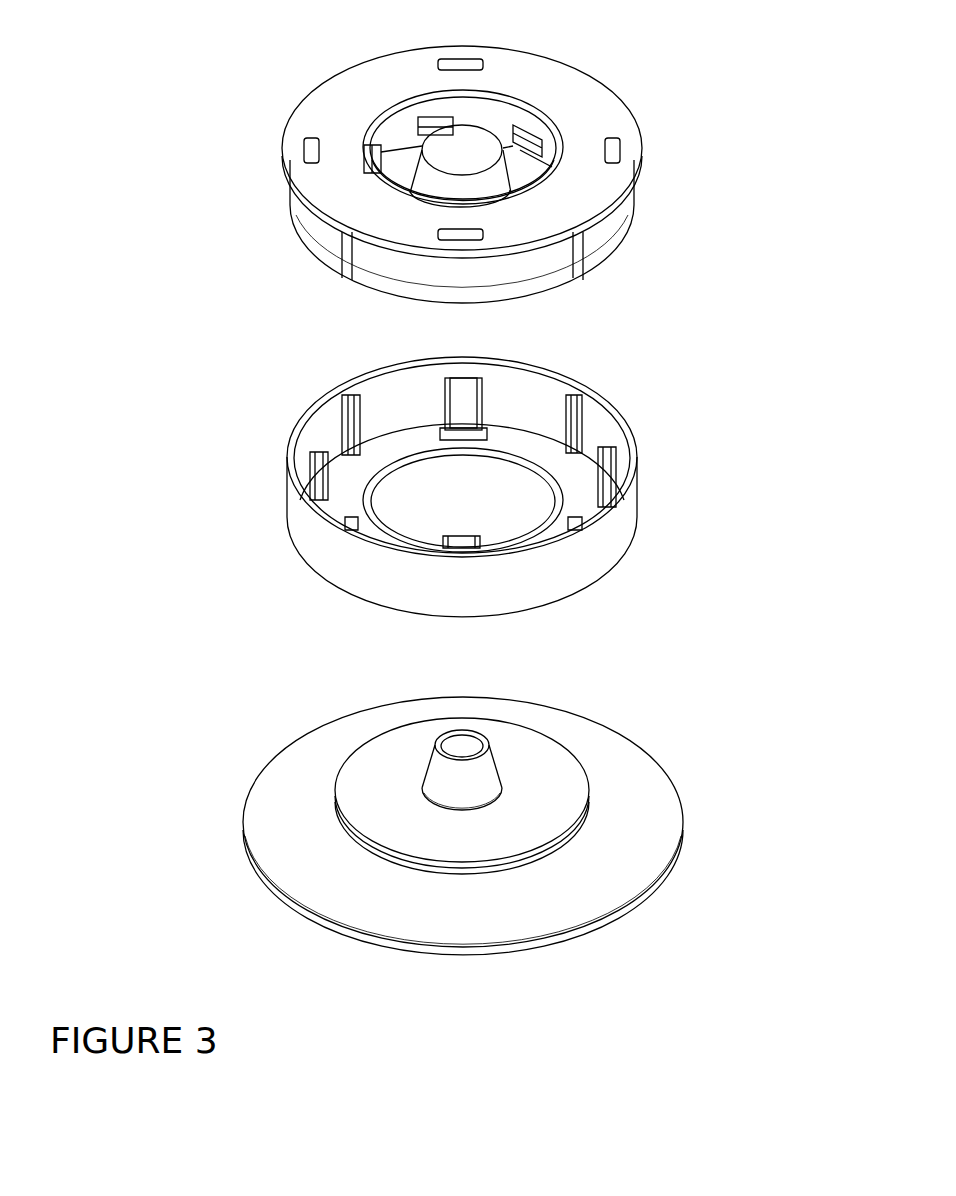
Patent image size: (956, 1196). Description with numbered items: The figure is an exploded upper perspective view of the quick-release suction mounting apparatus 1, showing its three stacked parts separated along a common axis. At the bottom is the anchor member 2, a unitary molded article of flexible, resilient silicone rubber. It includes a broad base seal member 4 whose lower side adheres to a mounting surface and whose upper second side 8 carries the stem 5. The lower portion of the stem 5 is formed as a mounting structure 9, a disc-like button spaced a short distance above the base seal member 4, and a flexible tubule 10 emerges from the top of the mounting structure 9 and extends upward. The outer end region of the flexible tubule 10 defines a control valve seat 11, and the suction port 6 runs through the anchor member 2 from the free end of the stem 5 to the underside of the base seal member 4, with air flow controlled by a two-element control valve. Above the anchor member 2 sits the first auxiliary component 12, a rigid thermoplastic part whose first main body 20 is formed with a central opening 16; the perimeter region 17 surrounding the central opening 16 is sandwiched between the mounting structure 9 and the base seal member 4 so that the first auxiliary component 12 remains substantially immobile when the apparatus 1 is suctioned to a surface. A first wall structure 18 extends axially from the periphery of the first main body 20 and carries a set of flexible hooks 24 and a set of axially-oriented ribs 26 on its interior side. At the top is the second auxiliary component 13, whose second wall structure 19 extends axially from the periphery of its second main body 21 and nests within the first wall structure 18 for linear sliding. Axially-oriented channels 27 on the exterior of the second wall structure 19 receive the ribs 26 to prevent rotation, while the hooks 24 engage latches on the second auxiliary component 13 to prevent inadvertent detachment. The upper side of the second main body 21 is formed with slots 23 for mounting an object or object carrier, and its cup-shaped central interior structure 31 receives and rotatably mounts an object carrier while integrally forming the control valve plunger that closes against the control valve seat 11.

The quick-release suction mounting apparatus 1 is at (153, 343).
The anchor member 2 is at (713, 723).
The base seal member 4 is at (698, 808).
The stem 5 is at (532, 765).
The suction port 6 is at (458, 743).
The upper second side 8 is at (632, 875).
The mounting structure 9 is at (390, 812).
The flexible tubule 10 is at (438, 777).
The control valve seat 11 is at (470, 740).
The first auxiliary component 12 is at (655, 493).
The second auxiliary component 13 is at (655, 202).
The central opening 16 is at (380, 485).
The perimeter region 17 is at (557, 477).
The first wall structure 18 is at (533, 390).
The second wall structure 19 is at (605, 242).
The first main body 20 is at (362, 470).
The second main body 21 is at (585, 112).
The slots 23 is at (452, 63).
The flexible hooks 24 is at (467, 390).
The axially-oriented ribs 26 is at (353, 403).
The axially-oriented channels 27 is at (345, 255).
The central interior structure 31 is at (492, 122).